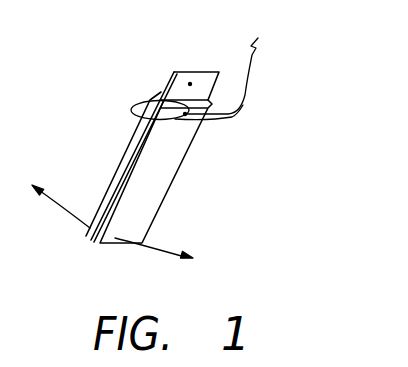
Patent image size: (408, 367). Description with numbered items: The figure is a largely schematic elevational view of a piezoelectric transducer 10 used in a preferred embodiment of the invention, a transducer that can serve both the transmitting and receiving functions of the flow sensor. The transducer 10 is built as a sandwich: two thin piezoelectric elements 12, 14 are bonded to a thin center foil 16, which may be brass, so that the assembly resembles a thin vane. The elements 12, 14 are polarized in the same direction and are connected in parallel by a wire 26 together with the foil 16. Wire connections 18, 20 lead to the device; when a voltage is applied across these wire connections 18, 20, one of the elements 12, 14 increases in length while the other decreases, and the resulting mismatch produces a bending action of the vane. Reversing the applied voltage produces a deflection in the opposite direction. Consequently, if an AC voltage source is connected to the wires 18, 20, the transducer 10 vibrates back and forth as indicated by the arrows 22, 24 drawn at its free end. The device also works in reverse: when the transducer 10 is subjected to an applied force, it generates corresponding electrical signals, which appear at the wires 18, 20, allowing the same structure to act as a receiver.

The piezoelectric transducer 10 is at (188, 127).
The piezoelectric element 12 is at (114, 177).
The piezoelectric element 14 is at (180, 145).
The center foil 16 is at (166, 88).
The wire connection 18 is at (190, 84).
The wire connection 20 is at (243, 112).
The arrow 22 is at (63, 212).
The arrow 24 is at (152, 253).
The wire 26 is at (131, 111).